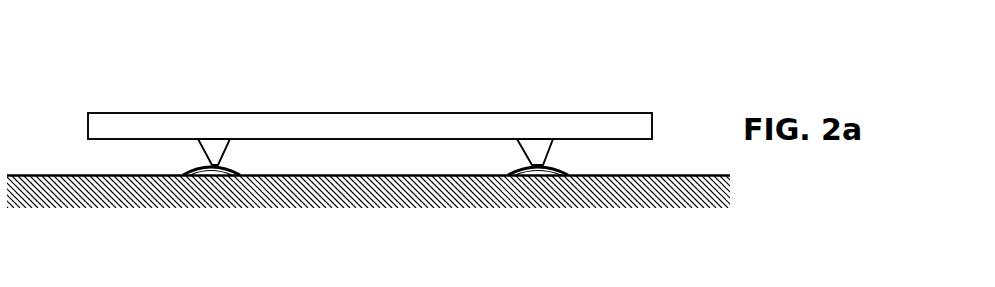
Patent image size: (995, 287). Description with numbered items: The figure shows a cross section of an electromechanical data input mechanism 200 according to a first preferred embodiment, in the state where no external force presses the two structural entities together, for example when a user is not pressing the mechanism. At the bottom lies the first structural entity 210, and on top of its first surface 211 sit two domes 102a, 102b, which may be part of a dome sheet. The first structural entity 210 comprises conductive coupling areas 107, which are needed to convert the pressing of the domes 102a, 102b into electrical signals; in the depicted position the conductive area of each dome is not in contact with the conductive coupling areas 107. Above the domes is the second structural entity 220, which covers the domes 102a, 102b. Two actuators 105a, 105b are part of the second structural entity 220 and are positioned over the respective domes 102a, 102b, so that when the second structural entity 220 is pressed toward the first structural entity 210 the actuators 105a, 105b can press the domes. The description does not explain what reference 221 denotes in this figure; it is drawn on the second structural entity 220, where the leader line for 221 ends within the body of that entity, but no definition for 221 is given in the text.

The electromechanical data input mechanism 200 is at (148, 54).
The second structural entity 220 is at (605, 113).
The chip body 221 is at (402, 145).
The actuator 105a is at (198, 150).
The actuator 105b is at (520, 150).
The dome 102a is at (186, 176).
The dome 102b is at (512, 176).
The conductive coupling areas 107 is at (222, 176).
The first structural entity 210 is at (713, 210).
The first surface 211 is at (650, 176).